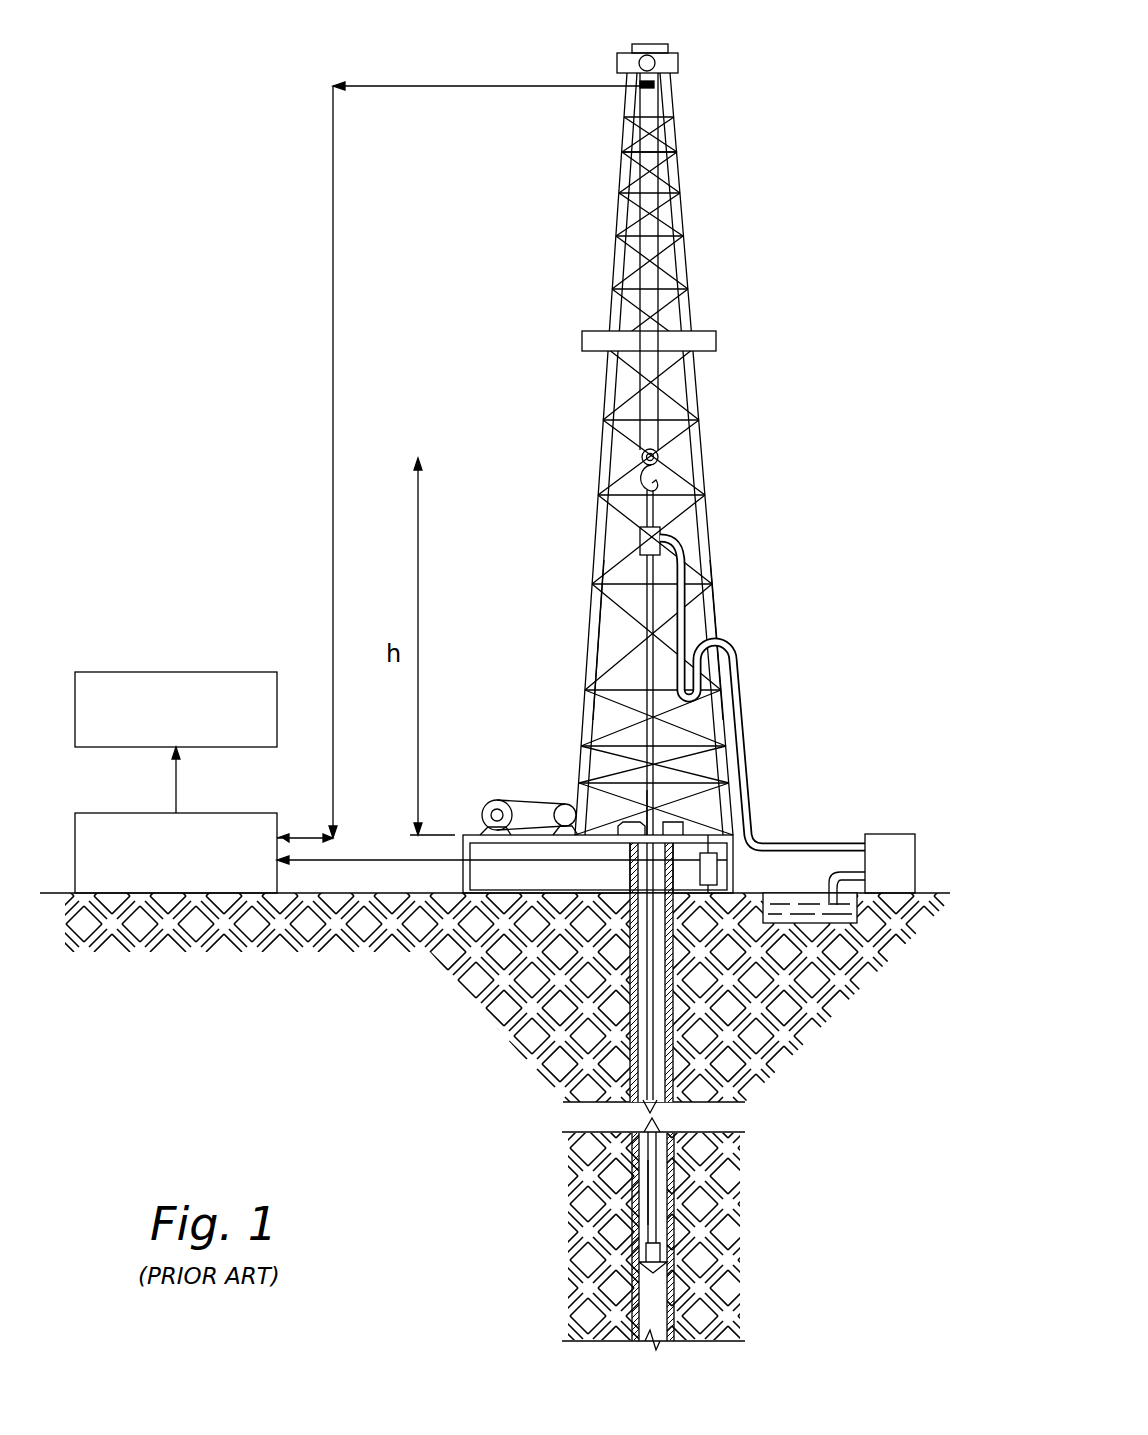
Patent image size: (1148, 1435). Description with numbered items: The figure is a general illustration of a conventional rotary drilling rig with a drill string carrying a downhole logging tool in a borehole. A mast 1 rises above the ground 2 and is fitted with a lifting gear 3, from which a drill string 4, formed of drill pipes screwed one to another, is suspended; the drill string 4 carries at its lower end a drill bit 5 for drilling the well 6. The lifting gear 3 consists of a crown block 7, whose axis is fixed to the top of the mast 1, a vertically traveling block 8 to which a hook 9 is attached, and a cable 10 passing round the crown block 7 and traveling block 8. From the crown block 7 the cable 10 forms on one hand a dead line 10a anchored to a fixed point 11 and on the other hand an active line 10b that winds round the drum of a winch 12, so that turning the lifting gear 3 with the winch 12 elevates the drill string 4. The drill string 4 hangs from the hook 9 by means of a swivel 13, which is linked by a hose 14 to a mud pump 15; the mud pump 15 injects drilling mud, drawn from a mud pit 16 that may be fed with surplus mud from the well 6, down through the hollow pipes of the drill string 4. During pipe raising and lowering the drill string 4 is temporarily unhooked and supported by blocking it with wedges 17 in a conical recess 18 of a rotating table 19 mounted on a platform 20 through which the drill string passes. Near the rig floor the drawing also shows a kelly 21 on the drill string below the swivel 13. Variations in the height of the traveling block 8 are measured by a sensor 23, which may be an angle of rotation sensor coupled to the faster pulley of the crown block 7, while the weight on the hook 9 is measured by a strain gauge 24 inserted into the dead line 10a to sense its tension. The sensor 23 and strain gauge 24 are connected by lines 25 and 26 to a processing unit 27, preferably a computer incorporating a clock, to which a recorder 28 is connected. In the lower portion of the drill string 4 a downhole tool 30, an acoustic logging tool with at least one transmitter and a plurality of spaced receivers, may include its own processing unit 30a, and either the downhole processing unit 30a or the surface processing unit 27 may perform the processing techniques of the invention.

The mast 1 is at (705, 402).
The ground 2 is at (500, 893).
The lifting gear 3 is at (625, 407).
The drill string 4 is at (655, 1155).
The drill bit 5 is at (655, 1255).
The well 6 is at (655, 1318).
The crown block 7 is at (643, 57).
The traveling block 8 is at (641, 452).
The hook 9 is at (637, 488).
The cable 10 is at (672, 288).
The dead line 10a is at (703, 622).
The active line 10b is at (597, 615).
The fixed point 11 is at (715, 893).
The winch 12 is at (530, 803).
The swivel 13 is at (640, 541).
The hose 14 is at (737, 662).
The mud pump 15 is at (890, 834).
The mud pit 16 is at (800, 905).
The wedges 17 is at (628, 822).
The conical recess 18 is at (656, 830).
The rotating table 19 is at (618, 832).
The platform 20 is at (694, 834).
The kelly 21 is at (648, 664).
The sensor 23 is at (658, 86).
The strain gauge 24 is at (717, 870).
The line 25 is at (325, 295).
The line 26 is at (352, 858).
The processing unit 27 is at (148, 813).
The recorder 28 is at (148, 672).
The downhole tool 30 is at (656, 1213).
The processing unit 30a is at (656, 1185).